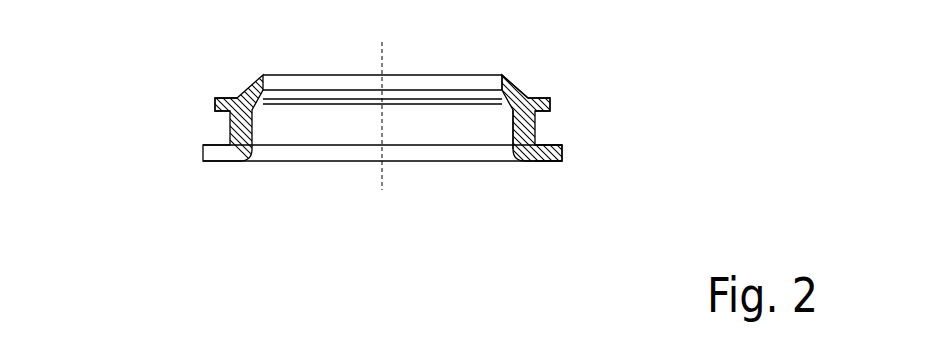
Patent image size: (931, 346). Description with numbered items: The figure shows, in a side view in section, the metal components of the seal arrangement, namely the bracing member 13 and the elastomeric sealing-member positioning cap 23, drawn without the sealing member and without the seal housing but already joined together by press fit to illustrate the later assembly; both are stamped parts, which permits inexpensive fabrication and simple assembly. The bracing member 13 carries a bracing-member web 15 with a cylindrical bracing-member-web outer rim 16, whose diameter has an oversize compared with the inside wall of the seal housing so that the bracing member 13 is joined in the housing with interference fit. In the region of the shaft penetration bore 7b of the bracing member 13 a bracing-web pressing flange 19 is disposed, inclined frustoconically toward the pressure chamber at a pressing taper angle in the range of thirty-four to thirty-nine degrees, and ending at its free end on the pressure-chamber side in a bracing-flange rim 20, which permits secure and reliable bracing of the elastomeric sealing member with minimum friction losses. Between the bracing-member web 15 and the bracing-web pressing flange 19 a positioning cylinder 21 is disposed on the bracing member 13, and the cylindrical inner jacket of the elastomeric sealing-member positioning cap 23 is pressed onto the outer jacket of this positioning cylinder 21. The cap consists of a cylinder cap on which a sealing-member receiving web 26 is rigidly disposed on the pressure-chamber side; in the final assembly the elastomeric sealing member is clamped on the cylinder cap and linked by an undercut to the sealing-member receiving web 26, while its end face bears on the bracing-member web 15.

The shaft penetration bore 7b is at (365, 83).
The bracing member 13 is at (203, 158).
The sealing-member receiving web 26 is at (217, 100).
The bracing-web pressing flange 19 is at (521, 90).
The bracing-flange rim 20 is at (502, 75).
The elastomeric sealing-member positioning cap 23 is at (537, 115).
The positioning cylinder 21 is at (514, 124).
The bracing-member web 15 is at (530, 160).
The bracing-member-web outer rim 16 is at (562, 147).